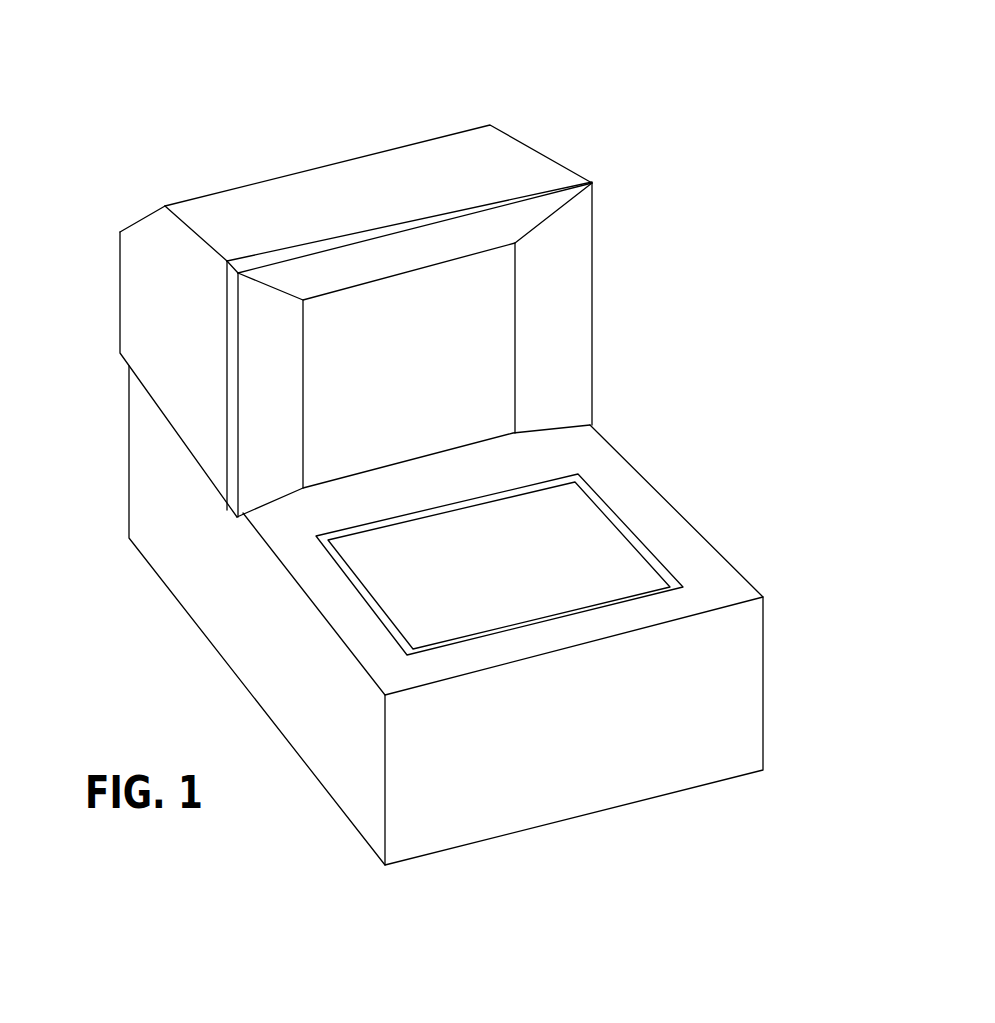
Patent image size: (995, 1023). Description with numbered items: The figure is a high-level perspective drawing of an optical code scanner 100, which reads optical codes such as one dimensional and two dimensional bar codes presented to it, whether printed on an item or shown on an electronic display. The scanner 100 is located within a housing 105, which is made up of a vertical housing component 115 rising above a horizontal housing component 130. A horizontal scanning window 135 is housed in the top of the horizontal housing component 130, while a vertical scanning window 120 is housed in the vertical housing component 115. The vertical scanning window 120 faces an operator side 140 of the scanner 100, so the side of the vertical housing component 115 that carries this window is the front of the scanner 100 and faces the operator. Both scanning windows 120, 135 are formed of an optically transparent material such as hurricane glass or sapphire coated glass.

The optical code scanner 100 is at (155, 93).
The housing 105 is at (147, 487).
The vertical housing component 115 is at (507, 157).
The vertical scanning window 120 is at (465, 318).
The horizontal housing component 130 is at (620, 485).
The horizontal scanning window 135 is at (592, 558).
The operator side 140 is at (593, 688).